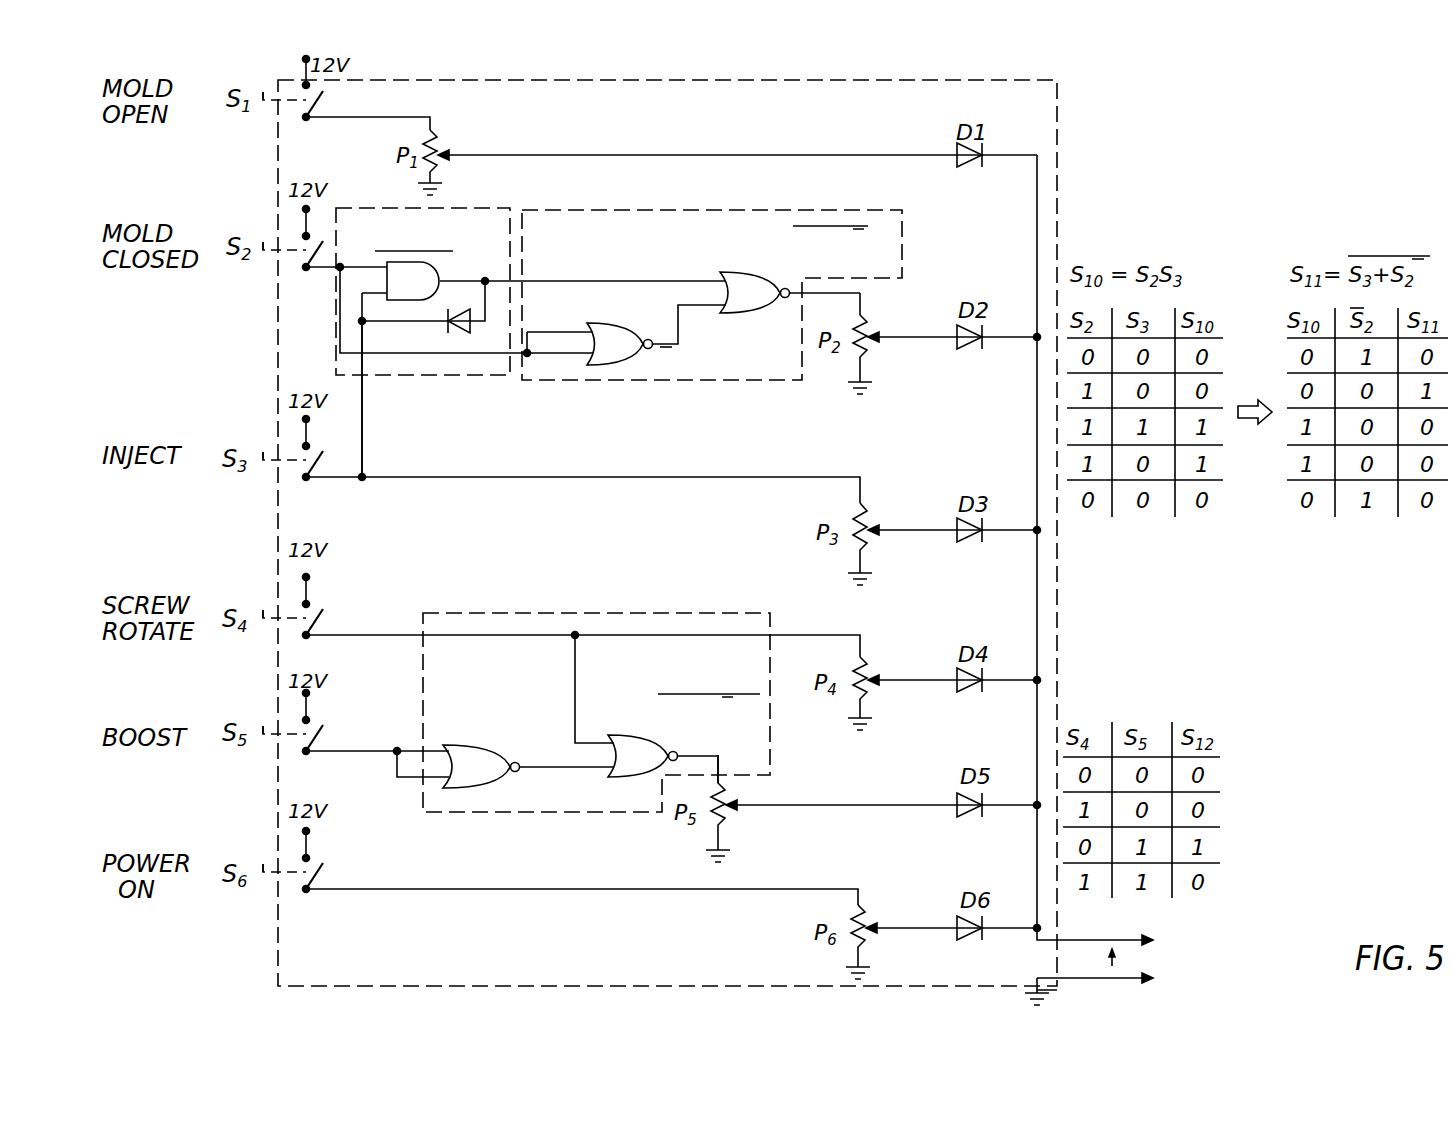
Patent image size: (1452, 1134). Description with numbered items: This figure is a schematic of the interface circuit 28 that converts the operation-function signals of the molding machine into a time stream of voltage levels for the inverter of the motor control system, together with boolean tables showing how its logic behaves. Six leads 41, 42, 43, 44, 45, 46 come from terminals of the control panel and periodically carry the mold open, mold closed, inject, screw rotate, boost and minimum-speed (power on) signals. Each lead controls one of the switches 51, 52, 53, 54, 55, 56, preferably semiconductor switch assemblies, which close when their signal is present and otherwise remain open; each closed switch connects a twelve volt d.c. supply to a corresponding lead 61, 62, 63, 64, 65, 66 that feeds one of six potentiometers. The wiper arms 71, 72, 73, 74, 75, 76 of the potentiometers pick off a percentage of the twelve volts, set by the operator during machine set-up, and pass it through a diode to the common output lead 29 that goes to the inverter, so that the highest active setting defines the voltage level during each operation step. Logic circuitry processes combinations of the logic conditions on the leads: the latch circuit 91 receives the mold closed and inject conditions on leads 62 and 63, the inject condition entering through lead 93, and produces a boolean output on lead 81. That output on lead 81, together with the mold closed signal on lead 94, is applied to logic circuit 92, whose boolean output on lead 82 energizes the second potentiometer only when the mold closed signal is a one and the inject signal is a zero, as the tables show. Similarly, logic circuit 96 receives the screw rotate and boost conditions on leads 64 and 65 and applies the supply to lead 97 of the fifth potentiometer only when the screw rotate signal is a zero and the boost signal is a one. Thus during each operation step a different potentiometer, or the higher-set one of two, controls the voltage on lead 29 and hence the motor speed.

The interface circuit 28 is at (1057, 130).
The output lead 29 is at (1037, 593).
The lead 41 is at (263, 92).
The lead 42 is at (263, 242).
The lead 43 is at (263, 452).
The lead 44 is at (263, 610).
The lead 45 is at (263, 726).
The lead 46 is at (263, 864).
The switch 51 is at (330, 103).
The switch 52 is at (322, 256).
The switch 53 is at (324, 460).
The switch 54 is at (325, 618).
The switch 55 is at (325, 735).
The switch 56 is at (325, 880).
The switch S1 output line 61 is at (352, 118).
The lead 62 is at (338, 288).
The lead 63 is at (330, 478).
The lead 64 is at (330, 636).
The lead 65 is at (330, 752).
The lead 66 is at (330, 890).
The potentiometer P1 output line to diode D1 71 is at (880, 154).
The wiper arm 72 is at (905, 336).
The potentiometer P3 output line to diode D3 73 is at (915, 529).
The potentiometer P4 output line to diode D4 74 is at (912, 679).
The potentiometer P5 output line to diode D5 75 is at (903, 804).
The potentiometer P6 output line to diode D6 76 is at (912, 927).
The lead 81 is at (582, 283).
The lead 82 is at (795, 300).
The latch circuit 91 is at (485, 208).
The logic circuit 92 is at (678, 210).
The feedback line from switch S3 93 is at (363, 420).
The lead 94 is at (455, 375).
The logic circuit 96 is at (645, 613).
The lead 97 is at (707, 752).